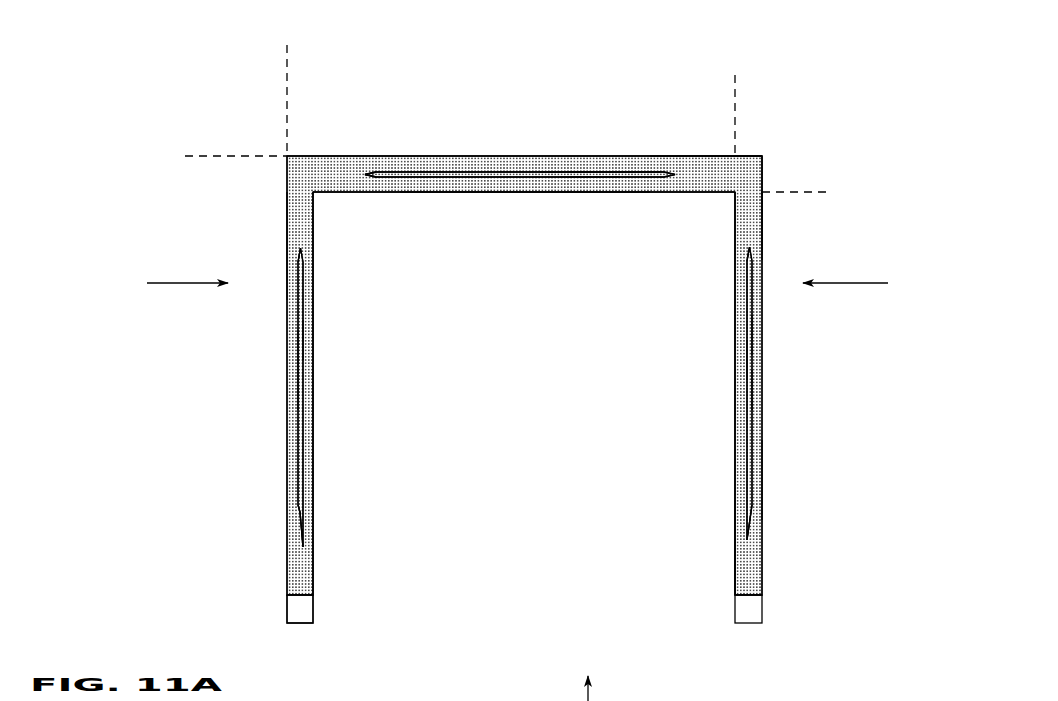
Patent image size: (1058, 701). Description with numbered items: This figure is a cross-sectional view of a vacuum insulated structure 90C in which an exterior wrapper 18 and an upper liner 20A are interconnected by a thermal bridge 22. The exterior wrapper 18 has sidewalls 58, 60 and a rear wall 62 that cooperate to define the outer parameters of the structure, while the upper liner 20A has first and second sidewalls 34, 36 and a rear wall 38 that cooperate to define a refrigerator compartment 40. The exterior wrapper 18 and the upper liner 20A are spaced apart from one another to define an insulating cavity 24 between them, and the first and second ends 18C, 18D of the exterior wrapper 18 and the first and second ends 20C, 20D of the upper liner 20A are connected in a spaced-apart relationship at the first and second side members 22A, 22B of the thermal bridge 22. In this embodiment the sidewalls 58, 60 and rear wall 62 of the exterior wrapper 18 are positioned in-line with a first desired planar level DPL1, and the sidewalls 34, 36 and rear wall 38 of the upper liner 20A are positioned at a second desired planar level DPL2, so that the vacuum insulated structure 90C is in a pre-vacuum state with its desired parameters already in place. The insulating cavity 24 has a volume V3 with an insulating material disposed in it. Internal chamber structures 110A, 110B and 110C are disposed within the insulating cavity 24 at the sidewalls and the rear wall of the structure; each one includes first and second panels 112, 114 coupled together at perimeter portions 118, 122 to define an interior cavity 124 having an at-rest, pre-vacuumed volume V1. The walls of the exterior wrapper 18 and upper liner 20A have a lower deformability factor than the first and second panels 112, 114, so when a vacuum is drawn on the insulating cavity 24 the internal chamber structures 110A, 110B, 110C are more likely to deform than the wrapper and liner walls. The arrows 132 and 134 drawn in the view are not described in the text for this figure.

The exterior wrapper 18 is at (337, 152).
The first end of exterior wrapper 18C is at (287, 595).
The second end of exterior wrapper 18D is at (762, 597).
The upper liner 20A is at (458, 195).
The first end of upper liner 20C is at (315, 595).
The second end of upper liner 20D is at (735, 595).
The thermal bridge 22 is at (265, 605).
The first side member of thermal bridge 22A is at (307, 633).
The second side member of thermal bridge 22B is at (755, 634).
The insulating cavity 24 is at (760, 222).
The first sidewall of upper liner 34 is at (313, 412).
The second sidewall of upper liner 36 is at (735, 400).
The rear wall of upper liner 38 is at (515, 195).
The refrigerator compartment 40 is at (592, 514).
The first sidewall of exterior wrapper 58 is at (287, 215).
The second sidewall of exterior wrapper 60 is at (762, 490).
The rear wall of exterior wrapper 62 is at (600, 157).
The vacuum insulated structure 90C is at (700, 126).
The internal chamber structure 110A is at (302, 422).
The internal chamber structure 110B is at (487, 172).
The internal chamber structure 110C is at (748, 482).
The first panel 112 is at (563, 172).
The second panel 114 is at (587, 195).
The perimeter portion 118 is at (383, 172).
The perimeter portion 122 is at (377, 178).
The interior cavity 124 is at (625, 170).
The load direction arrow 132 is at (185, 282).
The load direction arrow 134 is at (556, 688).
The pre-vacuumed volume V1 is at (455, 175).
The volume of insulating cavity V3 is at (745, 170).
The first desired planar level DPL1 is at (287, 82).
The second desired planar level DPL2 is at (735, 90).